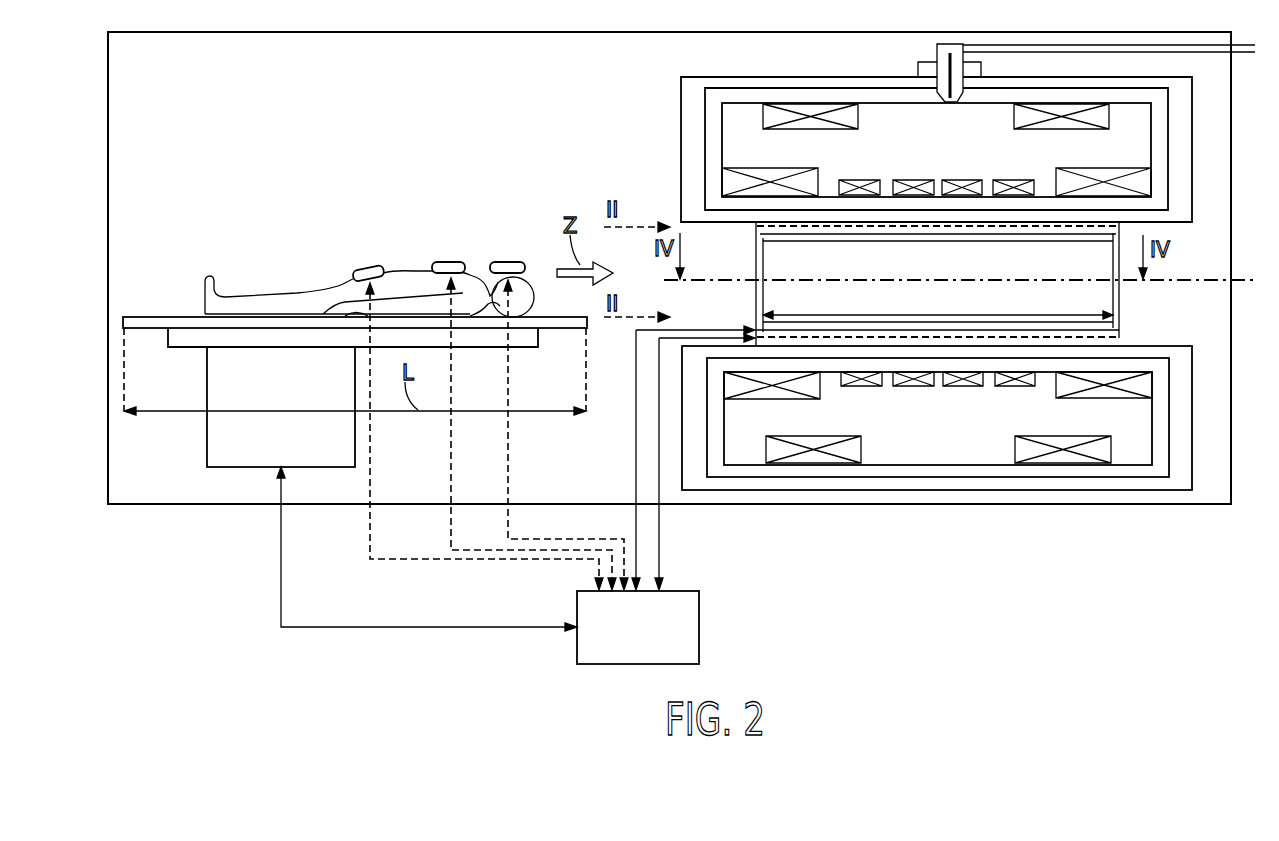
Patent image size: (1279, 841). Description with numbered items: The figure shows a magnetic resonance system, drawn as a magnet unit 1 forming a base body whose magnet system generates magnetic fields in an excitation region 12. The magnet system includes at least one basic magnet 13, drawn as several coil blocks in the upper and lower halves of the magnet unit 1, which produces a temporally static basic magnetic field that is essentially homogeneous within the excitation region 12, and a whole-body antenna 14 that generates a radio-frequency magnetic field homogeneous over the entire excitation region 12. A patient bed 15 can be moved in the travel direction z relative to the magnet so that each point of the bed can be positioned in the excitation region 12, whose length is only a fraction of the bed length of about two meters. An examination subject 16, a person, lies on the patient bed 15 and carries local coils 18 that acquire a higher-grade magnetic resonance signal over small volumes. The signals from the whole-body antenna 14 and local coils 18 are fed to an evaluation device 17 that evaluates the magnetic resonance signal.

The magnetic resonance device / magnet unit 1 is at (681, 104).
The excitation region 12 is at (748, 257).
The basic magnet 13 is at (753, 168).
The whole-body antenna 14 is at (894, 234).
The patient bed 15 is at (476, 348).
The examination subject 16 is at (410, 272).
The evaluation device 17 is at (703, 628).
The local coils 18 is at (370, 266).